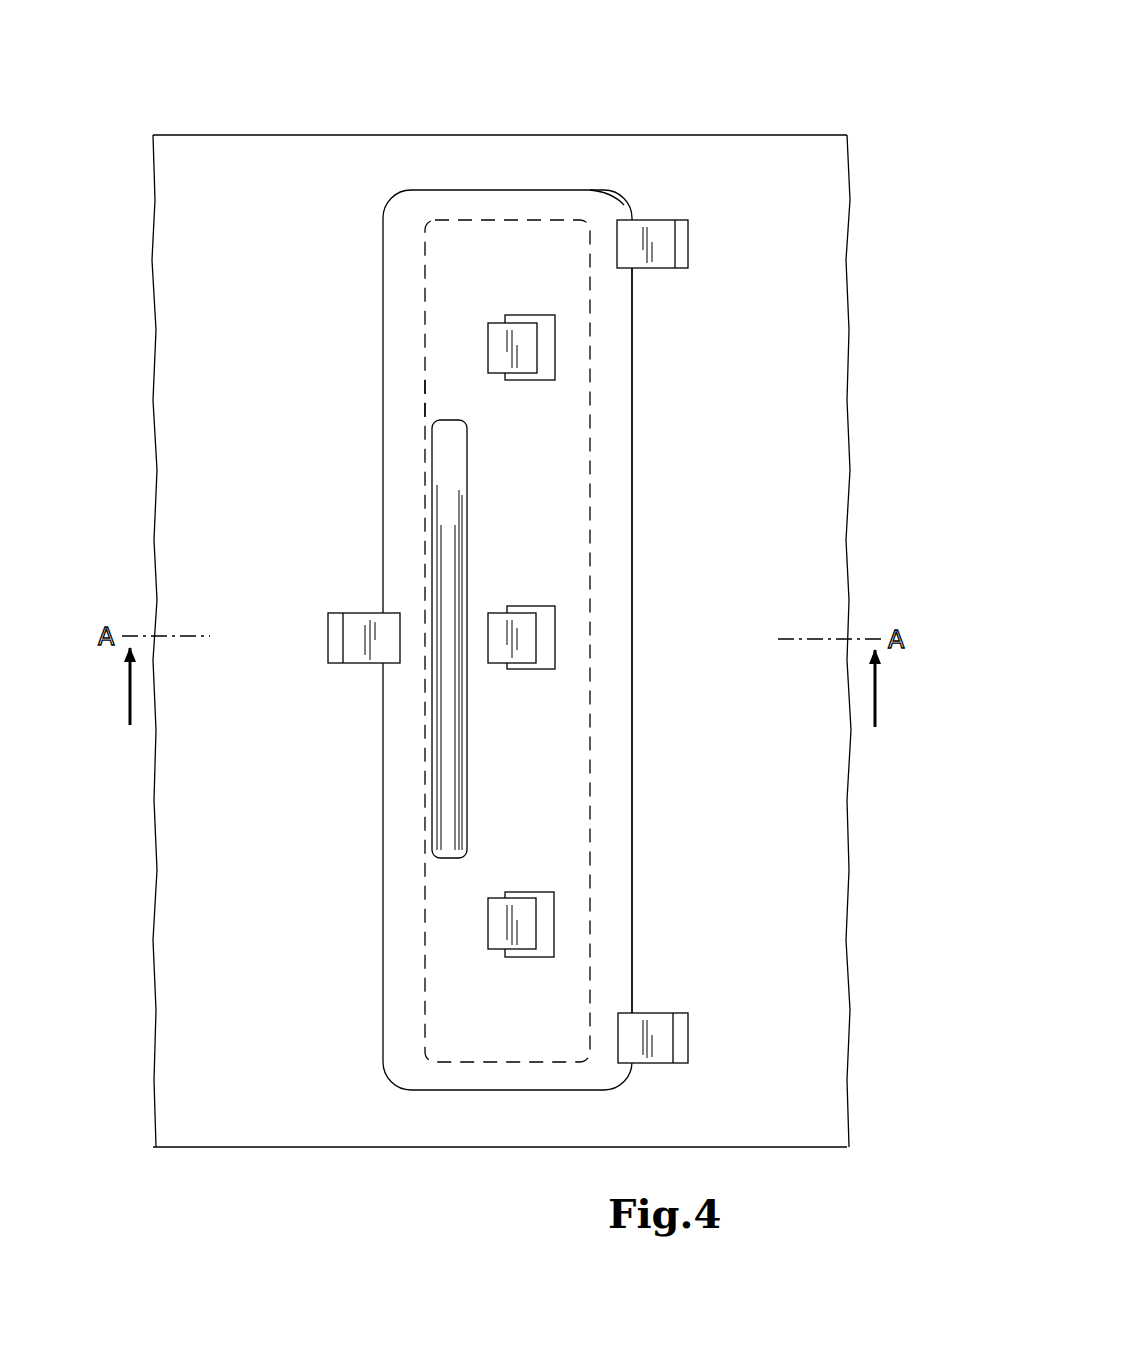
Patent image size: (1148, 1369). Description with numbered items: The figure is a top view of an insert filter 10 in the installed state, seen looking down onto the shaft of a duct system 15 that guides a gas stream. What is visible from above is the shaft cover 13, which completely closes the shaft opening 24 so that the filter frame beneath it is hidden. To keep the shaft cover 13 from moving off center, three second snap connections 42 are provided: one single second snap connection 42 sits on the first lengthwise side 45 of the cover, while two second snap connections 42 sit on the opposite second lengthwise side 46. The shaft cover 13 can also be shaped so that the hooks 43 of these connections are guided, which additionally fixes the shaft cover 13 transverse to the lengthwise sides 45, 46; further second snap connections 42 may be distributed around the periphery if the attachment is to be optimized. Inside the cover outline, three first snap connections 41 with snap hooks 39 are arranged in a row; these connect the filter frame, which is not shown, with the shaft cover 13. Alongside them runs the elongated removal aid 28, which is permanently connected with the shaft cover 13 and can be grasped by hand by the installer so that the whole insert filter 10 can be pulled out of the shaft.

The duct system 15 is at (353, 123).
The insert filter 10 is at (463, 240).
The shaft cover 13 is at (607, 205).
The first lengthwise side 45 is at (378, 305).
The second lengthwise side 46 is at (638, 355).
The shaft opening 24 is at (422, 400).
The removal aid 28 is at (443, 474).
The second snap connection 42 is at (692, 245).
The hook 43 is at (650, 238).
The first snap connection 41 is at (560, 384).
The snap hook 39 is at (500, 340).